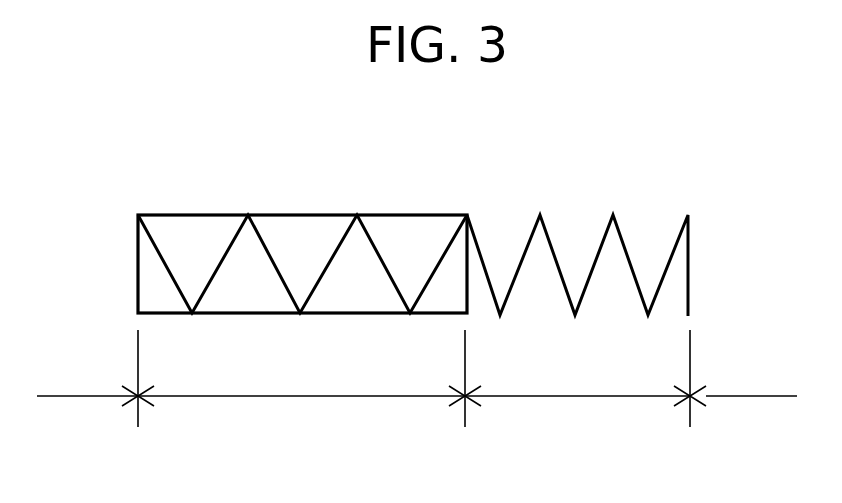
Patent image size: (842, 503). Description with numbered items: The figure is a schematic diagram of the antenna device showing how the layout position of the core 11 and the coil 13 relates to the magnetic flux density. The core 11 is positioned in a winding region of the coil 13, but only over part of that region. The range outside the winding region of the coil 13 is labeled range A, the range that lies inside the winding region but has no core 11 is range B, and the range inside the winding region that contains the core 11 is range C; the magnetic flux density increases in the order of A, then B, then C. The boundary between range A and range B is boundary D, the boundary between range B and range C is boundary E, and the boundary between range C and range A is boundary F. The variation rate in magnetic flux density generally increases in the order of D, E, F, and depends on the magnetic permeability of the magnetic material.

The core 11 is at (320, 215).
The coil 13 is at (546, 227).
The range outside winding region A is at (417, 380).
The range in winding region without core B is at (577, 380).
The range in winding region with core C is at (301, 380).
The boundary between range A and range B D is at (693, 399).
The boundary between range B and range C E is at (466, 399).
The boundary between range C and range A F is at (137, 399).